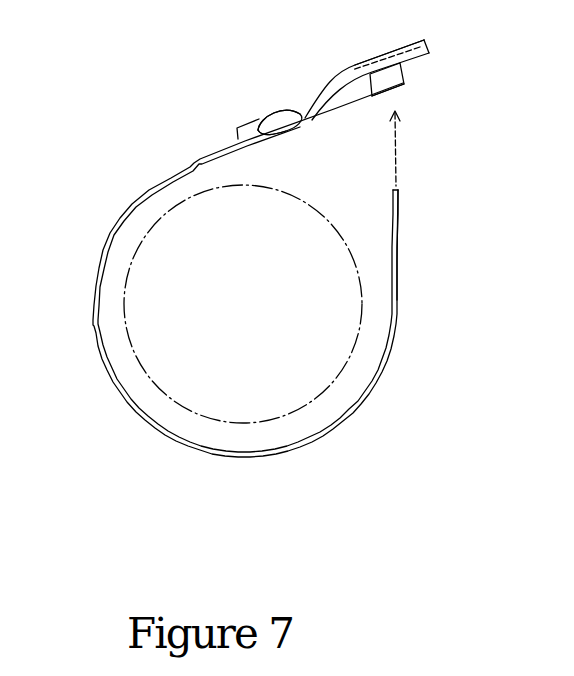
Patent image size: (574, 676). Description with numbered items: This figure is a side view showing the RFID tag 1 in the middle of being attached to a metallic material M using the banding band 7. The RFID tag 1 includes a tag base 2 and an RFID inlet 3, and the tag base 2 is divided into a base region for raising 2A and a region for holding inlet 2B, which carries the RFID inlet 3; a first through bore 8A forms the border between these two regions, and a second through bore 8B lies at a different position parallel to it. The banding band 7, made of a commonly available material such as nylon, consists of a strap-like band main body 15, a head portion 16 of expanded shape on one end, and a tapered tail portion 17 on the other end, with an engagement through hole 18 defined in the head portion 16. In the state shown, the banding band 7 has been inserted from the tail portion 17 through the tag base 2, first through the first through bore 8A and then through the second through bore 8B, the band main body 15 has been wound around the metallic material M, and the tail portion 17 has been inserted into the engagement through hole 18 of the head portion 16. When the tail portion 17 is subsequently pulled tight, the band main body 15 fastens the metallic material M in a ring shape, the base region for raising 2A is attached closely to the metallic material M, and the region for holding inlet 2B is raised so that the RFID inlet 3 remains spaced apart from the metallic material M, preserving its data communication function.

The RFID tag 1 is at (262, 100).
The tag base 2 is at (430, 44).
The base region for raising 2A is at (243, 118).
The region for holding inlet 2B is at (368, 42).
The RFID inlet 3 is at (403, 56).
The banding band 7 is at (254, 270).
The first through bore 8A is at (296, 106).
The second through bore 8B is at (268, 143).
The band main body 15 is at (93, 328).
The head portion 16 is at (404, 82).
The tail portion 17 is at (400, 218).
The engagement through hole 18 is at (404, 100).
The metallic material M is at (362, 275).